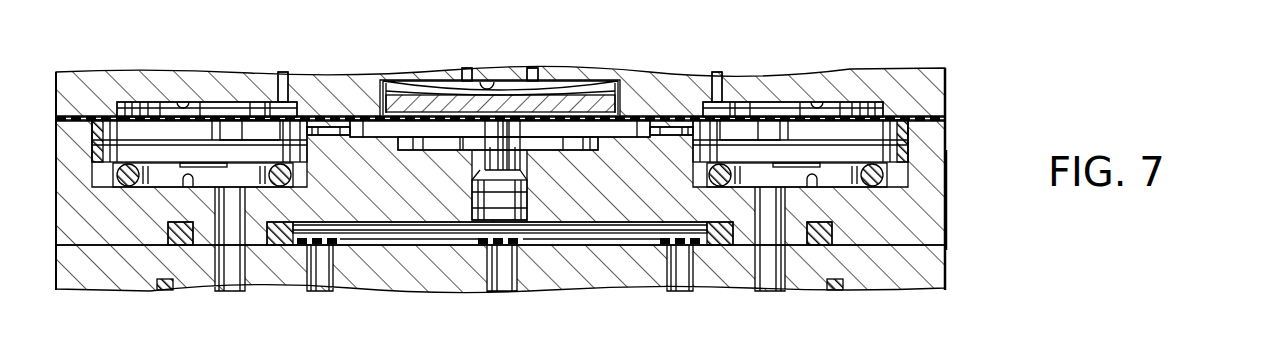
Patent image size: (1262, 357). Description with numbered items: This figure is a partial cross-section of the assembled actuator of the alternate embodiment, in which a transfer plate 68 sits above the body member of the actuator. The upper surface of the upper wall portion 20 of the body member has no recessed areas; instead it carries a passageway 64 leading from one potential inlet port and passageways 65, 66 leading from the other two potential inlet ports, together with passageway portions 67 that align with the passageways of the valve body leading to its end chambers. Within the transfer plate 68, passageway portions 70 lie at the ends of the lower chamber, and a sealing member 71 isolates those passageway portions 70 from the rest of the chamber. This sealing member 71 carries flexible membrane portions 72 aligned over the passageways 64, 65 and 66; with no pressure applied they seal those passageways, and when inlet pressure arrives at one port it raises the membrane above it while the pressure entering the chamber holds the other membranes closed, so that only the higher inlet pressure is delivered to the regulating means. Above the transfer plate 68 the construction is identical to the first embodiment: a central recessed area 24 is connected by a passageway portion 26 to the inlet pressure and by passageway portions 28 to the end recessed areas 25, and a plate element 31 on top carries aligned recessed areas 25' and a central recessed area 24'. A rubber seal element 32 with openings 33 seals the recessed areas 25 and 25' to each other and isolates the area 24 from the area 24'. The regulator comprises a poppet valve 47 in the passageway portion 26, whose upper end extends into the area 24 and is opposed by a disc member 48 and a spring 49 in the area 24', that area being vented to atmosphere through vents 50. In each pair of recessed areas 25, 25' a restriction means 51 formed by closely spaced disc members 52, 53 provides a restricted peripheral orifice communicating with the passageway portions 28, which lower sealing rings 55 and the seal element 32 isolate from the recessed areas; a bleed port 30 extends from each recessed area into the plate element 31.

The upper wall portion 20 is at (945, 266).
The central recessed area 24 is at (500, 149).
The centrally located recessed area 24' is at (499, 60).
The end recessed areas 25 is at (508, 189).
The recessed areas 25' is at (500, 66).
The passageway portion 26 is at (487, 163).
The passageway portions 28 is at (302, 137).
The bleed port 30 is at (284, 76).
The plate element 31 is at (54, 94).
The rubber seal element 32 is at (55, 120).
The openings 33 is at (148, 100).
The poppet valve 47 is at (518, 158).
The disc member 48 is at (413, 95).
The spring 49 is at (588, 95).
The vents 50 is at (466, 68).
The restriction means 51 is at (246, 114).
The disc member 52 is at (119, 102).
The disc member 53 is at (103, 160).
The lower sealing rings 55 is at (126, 188).
The passageway 64 is at (500, 272).
The passageway 65 is at (319, 275).
The passageway 66 is at (681, 275).
The passageway portions 67 is at (229, 275).
The transfer plate 68 is at (948, 195).
The passageway portions 70 is at (238, 204).
The sealing member 71 is at (396, 218).
The flexible membrane portions 72 is at (330, 236).